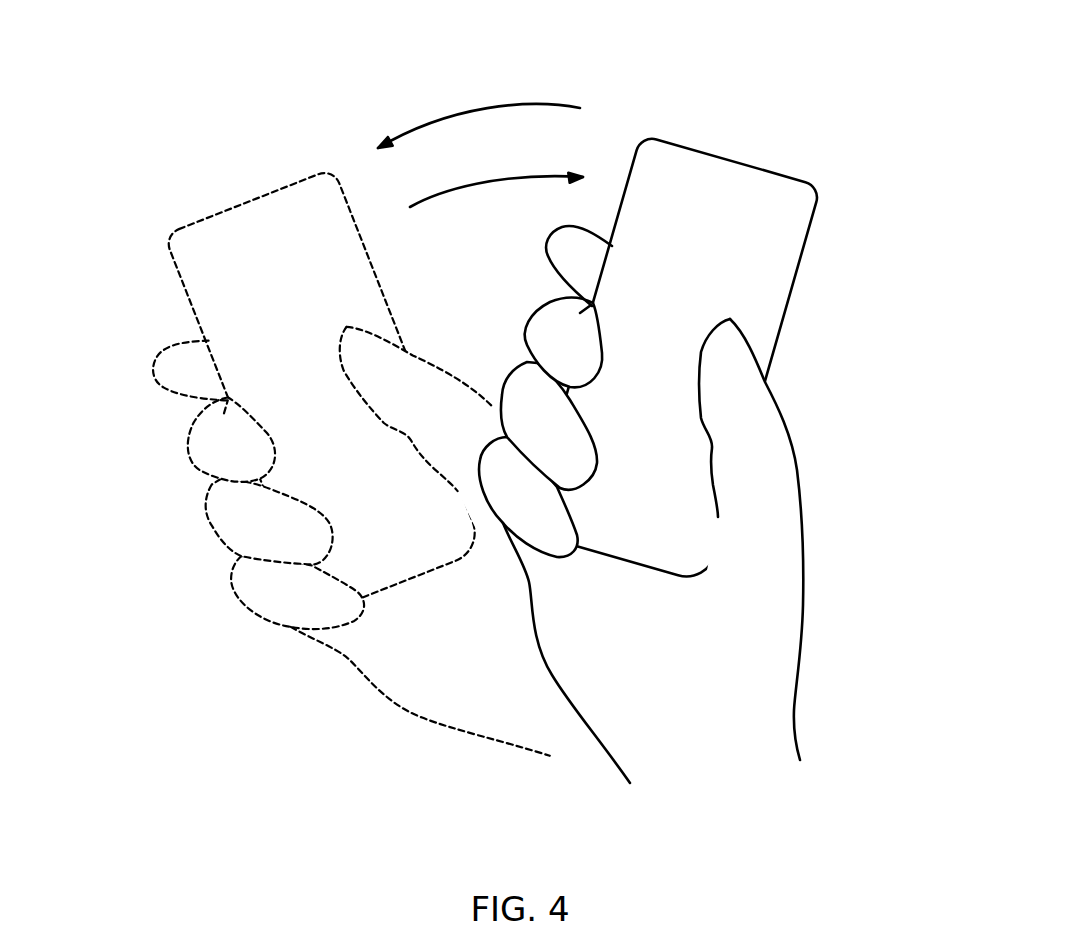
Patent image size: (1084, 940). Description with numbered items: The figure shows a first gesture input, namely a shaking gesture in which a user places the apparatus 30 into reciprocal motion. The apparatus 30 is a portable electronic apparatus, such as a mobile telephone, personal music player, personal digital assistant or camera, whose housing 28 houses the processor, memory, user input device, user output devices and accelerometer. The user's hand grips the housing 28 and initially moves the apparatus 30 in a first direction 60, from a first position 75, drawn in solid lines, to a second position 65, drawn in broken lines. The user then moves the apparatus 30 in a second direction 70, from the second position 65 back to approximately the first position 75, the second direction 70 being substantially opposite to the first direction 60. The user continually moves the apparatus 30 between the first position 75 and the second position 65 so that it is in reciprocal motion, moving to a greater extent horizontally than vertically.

The housing 28 is at (274, 194).
The apparatus 30 is at (497, 364).
The first direction 60 is at (520, 102).
The second direction 70 is at (467, 183).
The second position 65 is at (473, 659).
The first position 75 is at (676, 735).